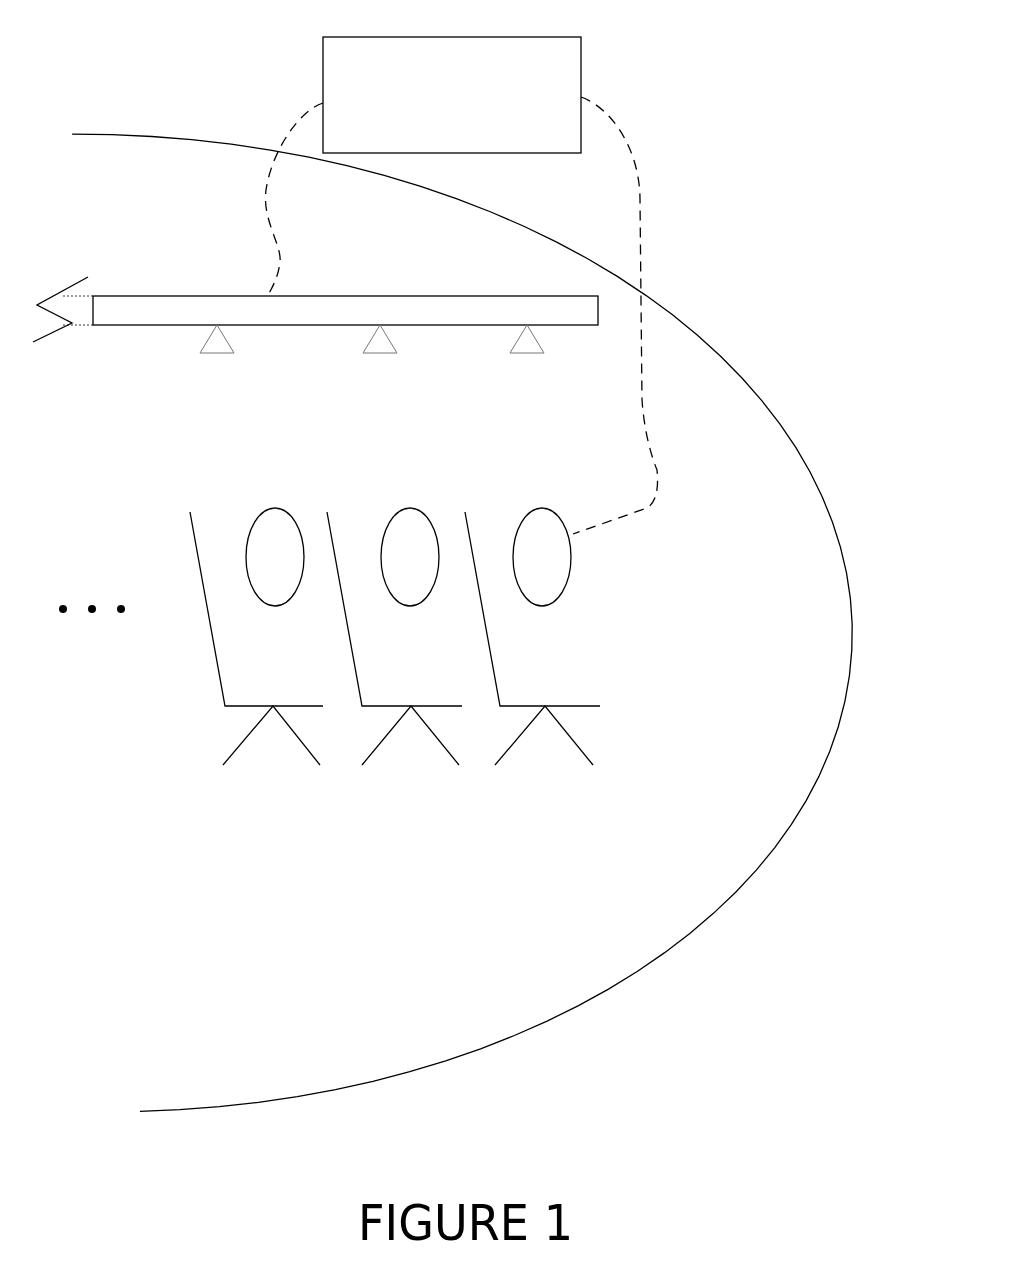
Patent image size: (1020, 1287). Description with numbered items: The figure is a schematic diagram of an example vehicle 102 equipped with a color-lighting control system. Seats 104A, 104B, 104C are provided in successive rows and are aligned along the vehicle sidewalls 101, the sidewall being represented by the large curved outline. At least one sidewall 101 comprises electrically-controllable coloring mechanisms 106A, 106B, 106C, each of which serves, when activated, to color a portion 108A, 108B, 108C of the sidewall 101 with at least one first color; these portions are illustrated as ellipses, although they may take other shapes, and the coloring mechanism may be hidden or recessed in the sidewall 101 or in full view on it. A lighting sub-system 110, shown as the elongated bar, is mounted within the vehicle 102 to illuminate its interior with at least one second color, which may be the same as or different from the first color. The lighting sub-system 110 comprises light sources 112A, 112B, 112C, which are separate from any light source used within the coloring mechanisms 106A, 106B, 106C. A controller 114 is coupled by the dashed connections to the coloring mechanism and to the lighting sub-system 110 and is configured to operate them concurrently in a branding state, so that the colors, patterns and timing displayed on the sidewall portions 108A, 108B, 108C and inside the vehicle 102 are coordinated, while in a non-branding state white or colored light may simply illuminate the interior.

The vehicle sidewall 101 is at (700, 342).
The vehicle 102 is at (836, 162).
The seat 104A is at (215, 672).
The seat 104B is at (355, 677).
The seat 104C is at (492, 675).
The electrically-controllable coloring mechanism 106A is at (549, 577).
The electrically-controllable coloring mechanism 106B is at (417, 577).
The electrically-controllable coloring mechanism 106C is at (282, 577).
The sidewall portion 108A is at (545, 508).
The sidewall portion 108B is at (412, 508).
The sidewall portion 108C is at (278, 508).
The lighting sub-system 110 is at (180, 296).
The light source 112A is at (529, 355).
The light source 112B is at (382, 355).
The light source 112C is at (218, 355).
The controller 114 is at (552, 37).